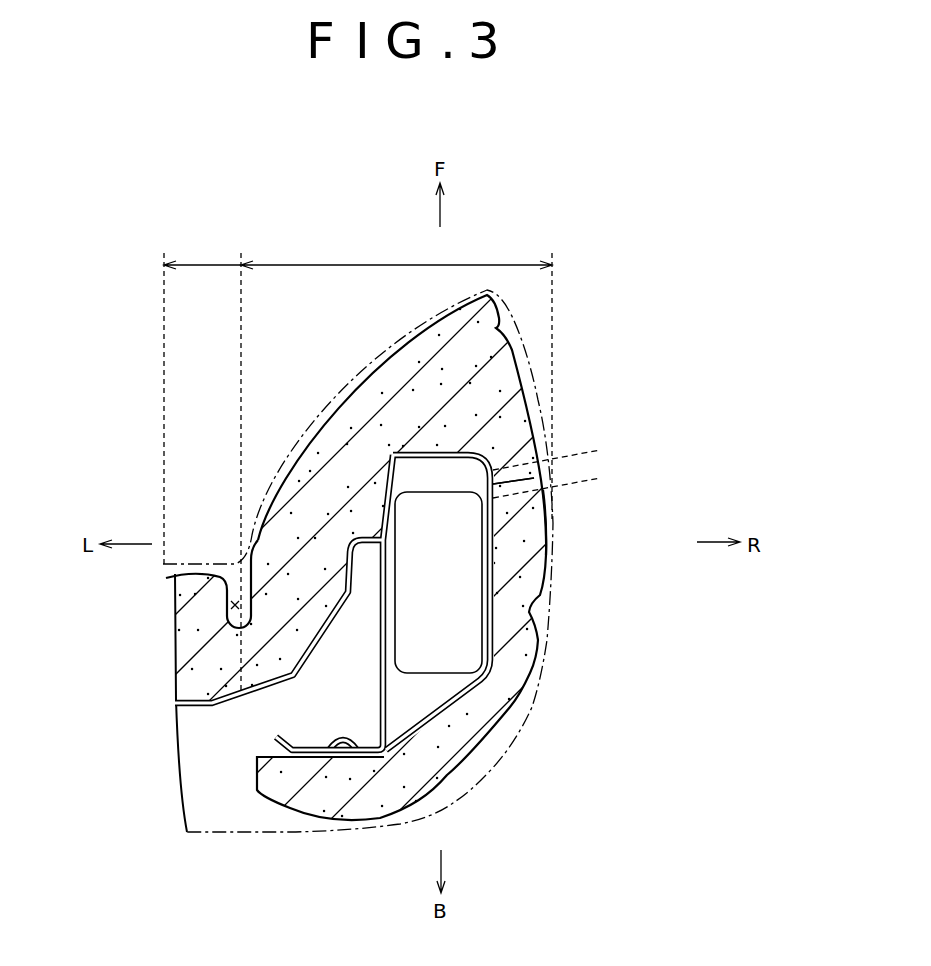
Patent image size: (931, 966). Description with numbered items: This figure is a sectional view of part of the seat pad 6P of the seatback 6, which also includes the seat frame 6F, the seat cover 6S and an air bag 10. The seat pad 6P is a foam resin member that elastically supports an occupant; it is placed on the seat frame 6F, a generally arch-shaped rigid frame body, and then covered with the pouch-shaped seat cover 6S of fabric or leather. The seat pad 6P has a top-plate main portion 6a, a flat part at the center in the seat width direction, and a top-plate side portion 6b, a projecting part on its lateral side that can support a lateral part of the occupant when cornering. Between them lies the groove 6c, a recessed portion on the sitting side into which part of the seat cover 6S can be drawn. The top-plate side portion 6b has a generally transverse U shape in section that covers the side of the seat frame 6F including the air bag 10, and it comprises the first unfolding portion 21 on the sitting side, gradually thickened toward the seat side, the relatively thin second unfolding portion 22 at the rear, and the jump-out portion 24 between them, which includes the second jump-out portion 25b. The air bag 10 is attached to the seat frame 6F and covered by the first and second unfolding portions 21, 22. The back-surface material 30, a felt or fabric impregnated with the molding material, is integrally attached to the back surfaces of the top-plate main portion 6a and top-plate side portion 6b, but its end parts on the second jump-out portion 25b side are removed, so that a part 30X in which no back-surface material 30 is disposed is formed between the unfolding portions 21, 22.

The seatback 6 is at (664, 281).
The top-plate main portion 6a is at (202, 462).
The top-plate side portion 6b is at (396, 377).
The groove 6c is at (227, 577).
The seat cover 6S is at (215, 564).
The seat pad 6P is at (455, 300).
The seat frame 6F is at (318, 748).
The first unfolding portion 21 is at (523, 359).
The second unfolding portion 22 is at (558, 526).
The second jump-out portion 25b is at (529, 467).
The jump-out portion 24 is at (513, 481).
The part in which no back-surface material is disposed 30X is at (600, 450).
The back-surface material 30 is at (201, 706).
The air bag 10 is at (440, 677).